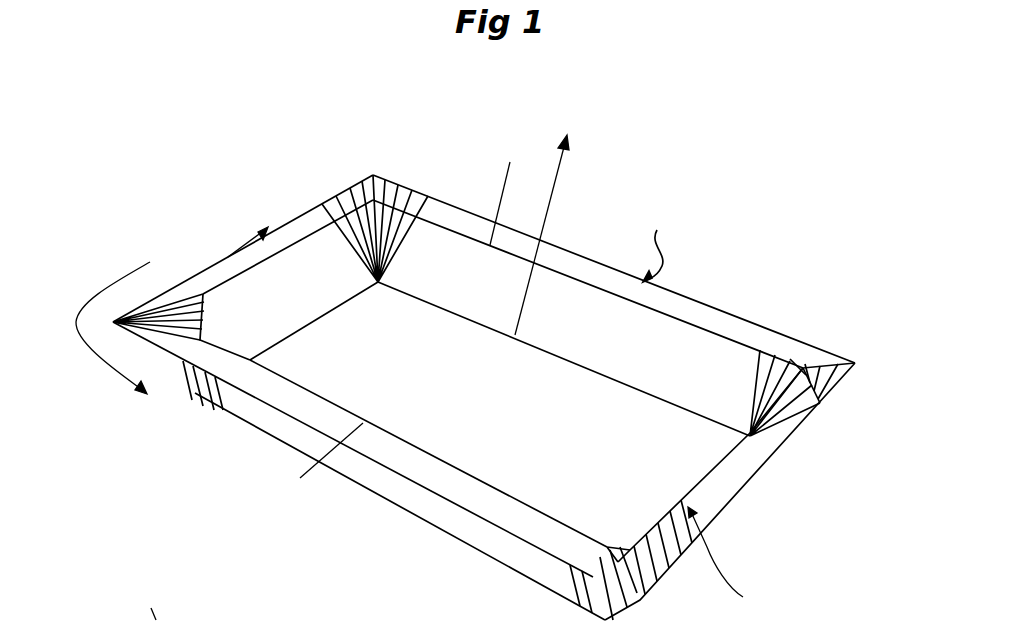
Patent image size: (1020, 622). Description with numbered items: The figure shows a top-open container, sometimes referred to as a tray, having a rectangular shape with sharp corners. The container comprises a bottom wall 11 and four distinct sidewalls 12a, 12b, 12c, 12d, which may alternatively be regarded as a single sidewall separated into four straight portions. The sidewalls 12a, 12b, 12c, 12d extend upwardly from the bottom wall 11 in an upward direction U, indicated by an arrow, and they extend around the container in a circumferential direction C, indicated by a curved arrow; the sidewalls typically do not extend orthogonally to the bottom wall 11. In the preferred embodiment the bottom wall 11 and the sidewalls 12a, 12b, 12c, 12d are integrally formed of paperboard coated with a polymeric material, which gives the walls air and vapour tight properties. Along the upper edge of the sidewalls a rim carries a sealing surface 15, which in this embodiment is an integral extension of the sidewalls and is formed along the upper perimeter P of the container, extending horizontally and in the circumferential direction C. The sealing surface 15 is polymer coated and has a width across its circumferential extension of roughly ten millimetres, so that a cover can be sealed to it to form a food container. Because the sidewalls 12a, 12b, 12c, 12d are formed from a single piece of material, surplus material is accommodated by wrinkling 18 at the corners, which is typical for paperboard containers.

The bottom wall 11 is at (486, 378).
The sidewall 12a is at (614, 305).
The sidewall 12b is at (717, 457).
The sidewall 12c is at (374, 473).
The sidewall 12d is at (297, 272).
The sealing surface 15 is at (730, 320).
The wrinkling 18 is at (406, 240).
The upper perimeter P is at (230, 253).
The upward direction U is at (365, 362).
The circumferential direction C is at (113, 322).